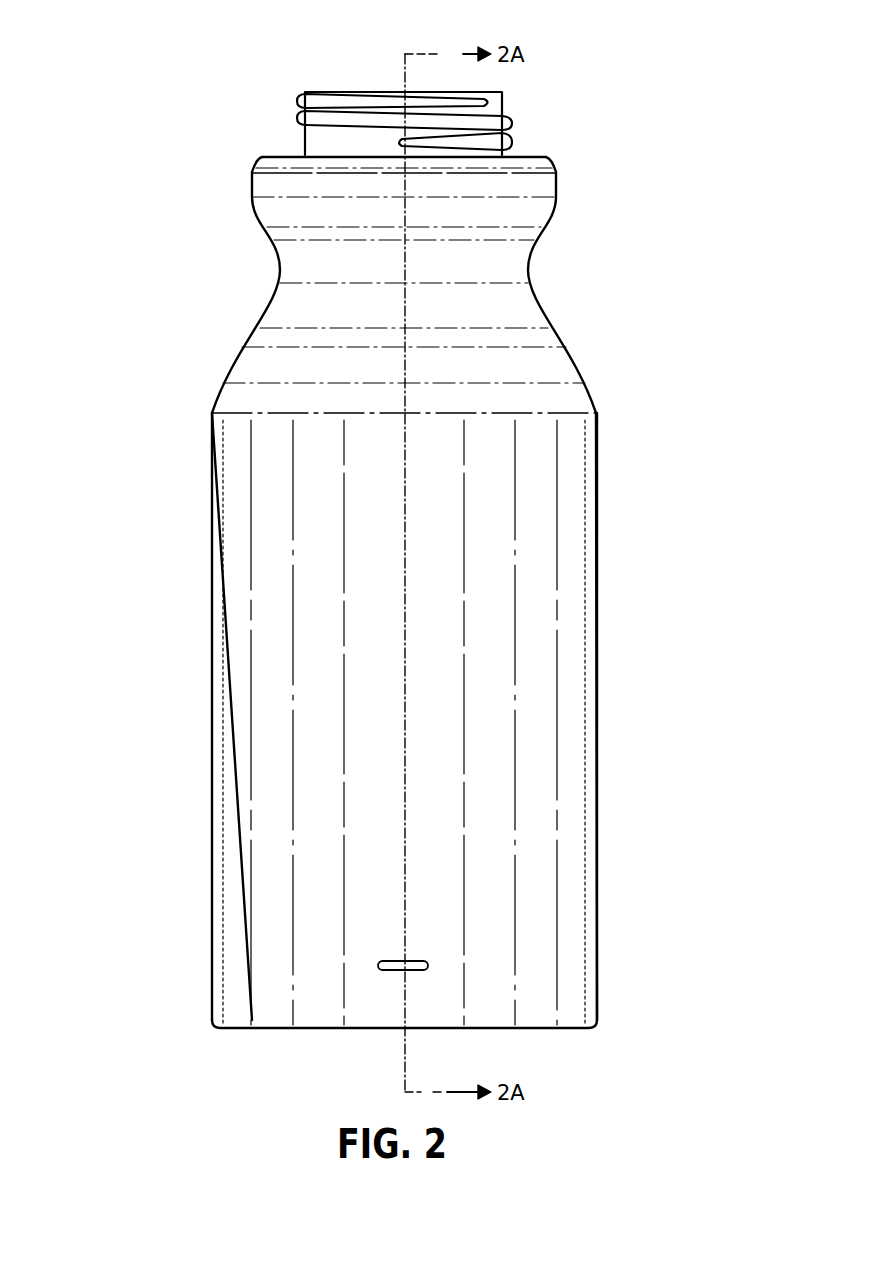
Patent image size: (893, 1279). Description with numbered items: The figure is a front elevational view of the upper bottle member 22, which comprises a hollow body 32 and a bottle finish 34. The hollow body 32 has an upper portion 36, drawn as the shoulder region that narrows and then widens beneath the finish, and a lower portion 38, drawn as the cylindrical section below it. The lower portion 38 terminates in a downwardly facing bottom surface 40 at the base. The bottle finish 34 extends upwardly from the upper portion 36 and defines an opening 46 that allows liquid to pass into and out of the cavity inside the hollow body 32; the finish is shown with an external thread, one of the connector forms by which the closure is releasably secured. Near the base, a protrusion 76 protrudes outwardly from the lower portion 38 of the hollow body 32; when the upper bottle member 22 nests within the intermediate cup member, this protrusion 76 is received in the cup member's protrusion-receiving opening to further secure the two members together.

The upper bottle member 22 is at (692, 143).
The hollow body 32 is at (598, 703).
The bottle finish 34 is at (298, 117).
The upper portion 36 is at (104, 155).
The lower portion 38 is at (103, 612).
The downwardly facing bottom surface 40 is at (514, 1028).
The opening 46 is at (384, 92).
The protrusion 76 is at (407, 971).